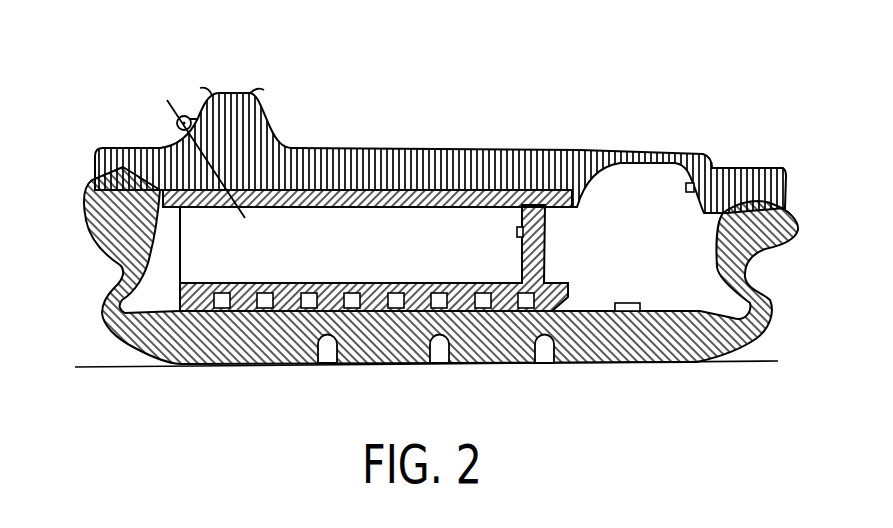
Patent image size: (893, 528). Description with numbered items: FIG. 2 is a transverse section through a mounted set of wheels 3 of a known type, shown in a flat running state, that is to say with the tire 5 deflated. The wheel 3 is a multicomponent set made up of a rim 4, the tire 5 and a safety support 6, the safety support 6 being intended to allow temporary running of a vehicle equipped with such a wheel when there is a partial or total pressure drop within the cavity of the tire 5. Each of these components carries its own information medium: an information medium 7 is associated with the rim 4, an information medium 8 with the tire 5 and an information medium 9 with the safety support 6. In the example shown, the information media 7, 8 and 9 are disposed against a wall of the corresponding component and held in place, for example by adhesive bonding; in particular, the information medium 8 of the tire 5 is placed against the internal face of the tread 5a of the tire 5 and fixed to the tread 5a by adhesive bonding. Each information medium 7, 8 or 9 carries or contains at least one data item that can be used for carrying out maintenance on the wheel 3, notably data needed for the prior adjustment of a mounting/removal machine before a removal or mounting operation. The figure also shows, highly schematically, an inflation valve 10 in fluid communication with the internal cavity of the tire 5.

The multicomponent set 3 is at (440, 138).
The rim 4 is at (430, 150).
The tire 5 is at (428, 290).
The tread 5a is at (253, 345).
The safety support 6 is at (546, 250).
The information medium 7 is at (700, 178).
The information medium 8 is at (630, 303).
The information medium 9 is at (517, 232).
The inflation valve 10 is at (177, 123).